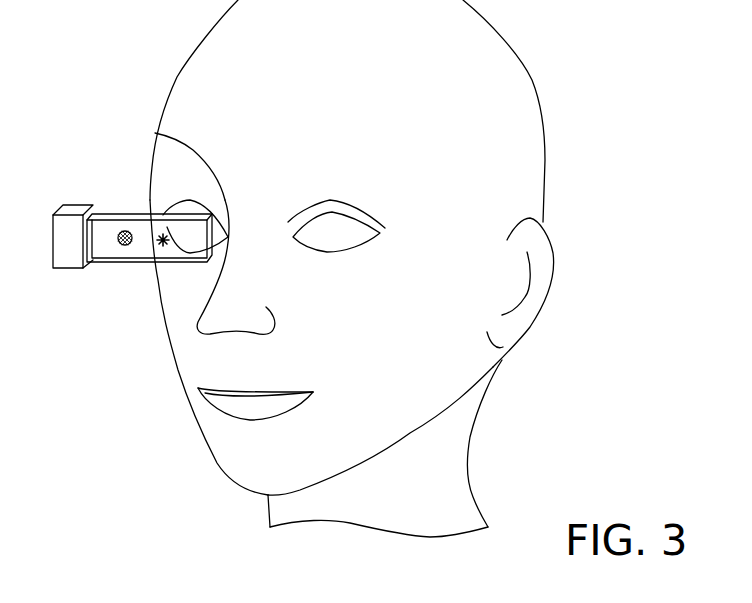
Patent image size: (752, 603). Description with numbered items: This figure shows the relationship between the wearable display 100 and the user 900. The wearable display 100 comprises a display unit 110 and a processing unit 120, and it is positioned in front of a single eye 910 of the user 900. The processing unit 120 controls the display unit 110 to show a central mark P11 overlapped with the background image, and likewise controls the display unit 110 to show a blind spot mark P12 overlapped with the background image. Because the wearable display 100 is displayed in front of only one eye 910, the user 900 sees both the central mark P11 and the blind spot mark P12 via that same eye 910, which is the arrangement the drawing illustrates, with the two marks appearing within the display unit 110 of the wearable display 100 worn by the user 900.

The user 900 is at (180, 92).
The single eye 910 is at (155, 133).
The wearable display 100 is at (124, 259).
The display unit 110 is at (130, 262).
The processing unit 120 is at (73, 258).
The central mark P11 is at (161, 238).
The blind spot mark P12 is at (127, 231).